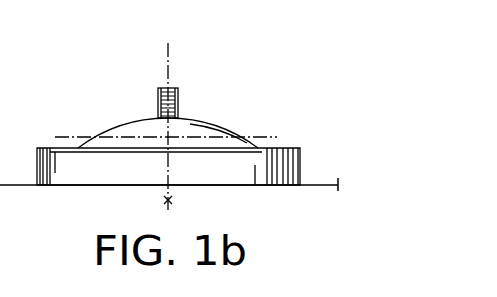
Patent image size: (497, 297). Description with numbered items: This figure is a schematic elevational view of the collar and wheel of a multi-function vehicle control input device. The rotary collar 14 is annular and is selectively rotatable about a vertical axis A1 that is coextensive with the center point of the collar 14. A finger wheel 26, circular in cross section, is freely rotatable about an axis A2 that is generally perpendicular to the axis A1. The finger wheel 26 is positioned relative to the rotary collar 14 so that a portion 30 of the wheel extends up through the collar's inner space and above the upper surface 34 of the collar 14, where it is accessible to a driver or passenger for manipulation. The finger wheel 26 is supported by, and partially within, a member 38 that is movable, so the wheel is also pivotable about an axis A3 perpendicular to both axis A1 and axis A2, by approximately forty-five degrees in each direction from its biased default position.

The rotary collar 14 is at (300, 160).
The finger wheel 26 is at (180, 92).
The portion of the finger wheel 30 is at (157, 97).
The upper surface 34 is at (292, 150).
The member 38 is at (127, 122).
The axis A1 is at (173, 62).
The axis A2 is at (67, 137).
The axis A3 is at (178, 201).